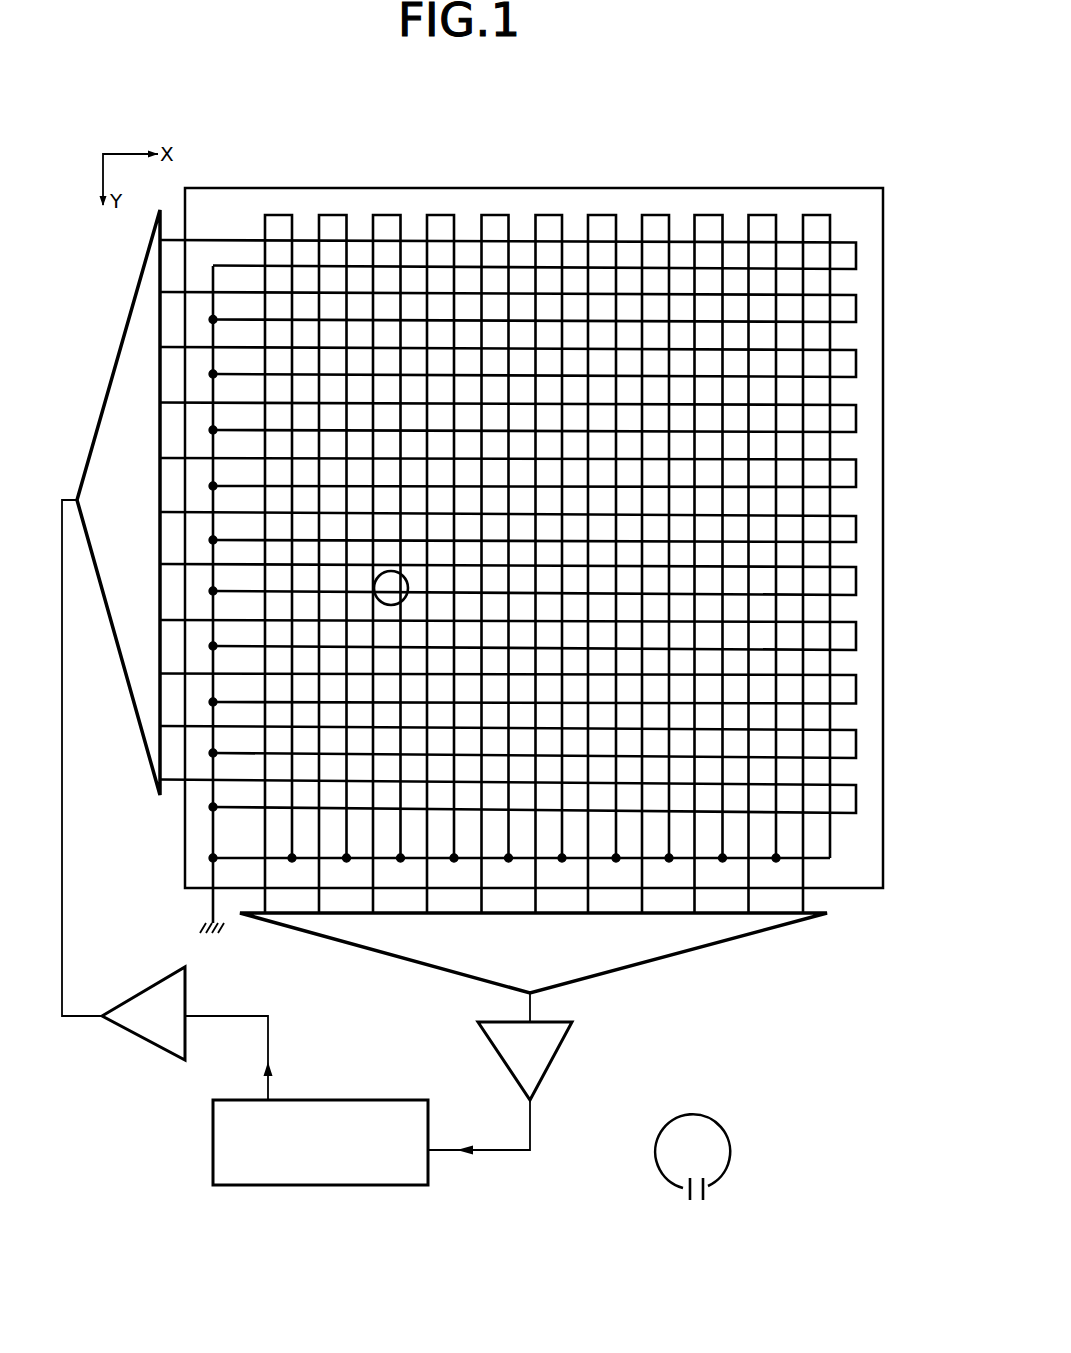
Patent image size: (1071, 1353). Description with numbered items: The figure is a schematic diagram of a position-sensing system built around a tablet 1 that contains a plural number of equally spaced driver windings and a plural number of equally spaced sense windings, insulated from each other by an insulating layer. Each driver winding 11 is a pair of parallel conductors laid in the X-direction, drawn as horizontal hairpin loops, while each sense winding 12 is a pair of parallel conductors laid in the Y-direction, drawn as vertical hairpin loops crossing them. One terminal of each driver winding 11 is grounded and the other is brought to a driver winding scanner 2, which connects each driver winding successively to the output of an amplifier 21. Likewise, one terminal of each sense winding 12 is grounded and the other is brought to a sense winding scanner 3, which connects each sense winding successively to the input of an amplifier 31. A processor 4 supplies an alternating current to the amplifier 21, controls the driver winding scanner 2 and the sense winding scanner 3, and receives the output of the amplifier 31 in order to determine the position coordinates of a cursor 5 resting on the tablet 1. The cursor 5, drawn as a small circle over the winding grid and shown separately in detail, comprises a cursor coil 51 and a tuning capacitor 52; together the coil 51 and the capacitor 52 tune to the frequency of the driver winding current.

The tablet 1 is at (262, 188).
The driver winding scanner 2 is at (122, 670).
The sense winding scanner 3 is at (622, 970).
The processor 4 is at (355, 1187).
The cursor 5 is at (388, 606).
The driver winding 11 is at (857, 795).
The sense winding 12 is at (497, 200).
The amplifier 21 is at (147, 989).
The amplifier 31 is at (557, 1060).
The cursor coil 51 is at (732, 1148).
The tuning capacitor 52 is at (706, 1192).